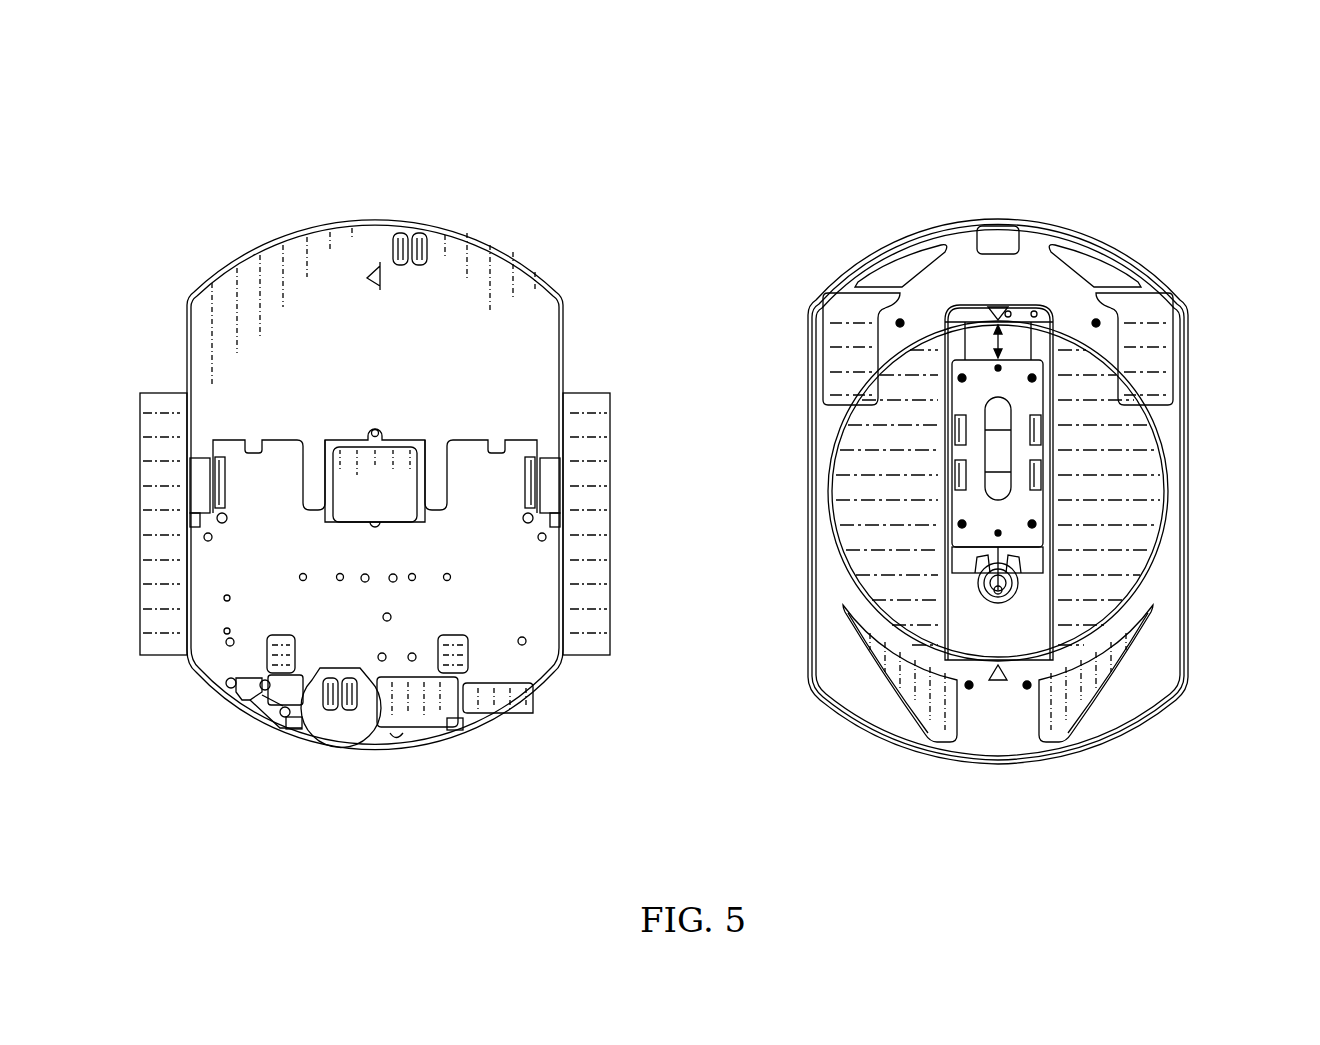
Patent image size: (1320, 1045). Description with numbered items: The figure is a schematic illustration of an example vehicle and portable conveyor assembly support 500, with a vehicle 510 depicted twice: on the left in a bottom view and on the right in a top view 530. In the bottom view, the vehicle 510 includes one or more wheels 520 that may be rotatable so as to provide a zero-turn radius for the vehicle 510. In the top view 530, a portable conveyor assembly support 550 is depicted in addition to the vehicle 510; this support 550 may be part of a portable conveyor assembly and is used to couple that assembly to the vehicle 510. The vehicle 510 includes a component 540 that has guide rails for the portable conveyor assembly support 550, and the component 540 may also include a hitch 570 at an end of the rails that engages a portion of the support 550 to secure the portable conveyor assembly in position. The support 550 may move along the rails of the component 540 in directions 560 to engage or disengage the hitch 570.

The vehicle and portable conveyor assembly support 500 is at (1196, 67).
The vehicle 510 is at (573, 175).
The wheels 520 is at (393, 244).
The top view 530 is at (1192, 177).
The component 540 is at (1032, 630).
The portable conveyor assembly support 550 is at (966, 403).
The directions 560 is at (996, 340).
The hitch 570 is at (1023, 582).